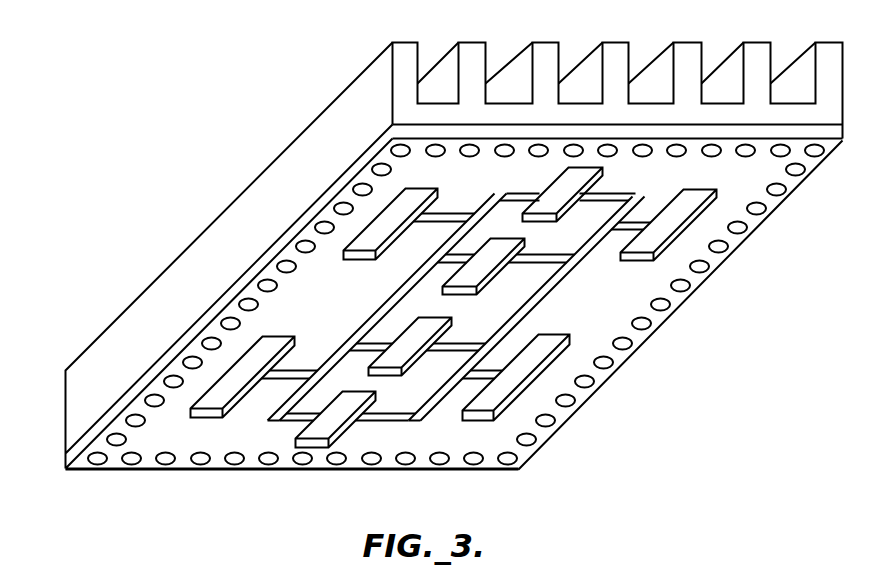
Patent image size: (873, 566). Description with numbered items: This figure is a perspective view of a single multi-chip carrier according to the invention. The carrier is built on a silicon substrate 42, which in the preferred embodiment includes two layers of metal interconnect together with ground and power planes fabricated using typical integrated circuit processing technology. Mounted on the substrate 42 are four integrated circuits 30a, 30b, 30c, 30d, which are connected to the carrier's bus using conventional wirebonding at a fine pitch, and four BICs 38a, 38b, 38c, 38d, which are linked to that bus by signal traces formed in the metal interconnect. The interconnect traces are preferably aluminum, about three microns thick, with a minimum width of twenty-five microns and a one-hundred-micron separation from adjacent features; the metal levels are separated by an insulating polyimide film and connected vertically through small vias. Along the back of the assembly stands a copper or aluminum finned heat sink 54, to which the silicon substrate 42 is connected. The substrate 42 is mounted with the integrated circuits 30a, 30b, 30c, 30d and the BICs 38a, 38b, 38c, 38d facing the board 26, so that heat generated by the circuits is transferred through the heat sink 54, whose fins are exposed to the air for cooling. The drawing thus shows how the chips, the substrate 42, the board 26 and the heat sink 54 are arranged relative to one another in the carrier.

The board 26 is at (688, 299).
The integrated circuit 30a is at (536, 213).
The integrated circuit 30b is at (458, 286).
The integrated circuit 30c is at (381, 368).
The integrated circuit 30d is at (316, 438).
The BIC 38a is at (660, 238).
The BIC 38b is at (373, 238).
The BIC 38c is at (503, 402).
The BIC 38d is at (217, 410).
The silicon substrate 42 is at (64, 467).
The heat sink 54 is at (471, 52).